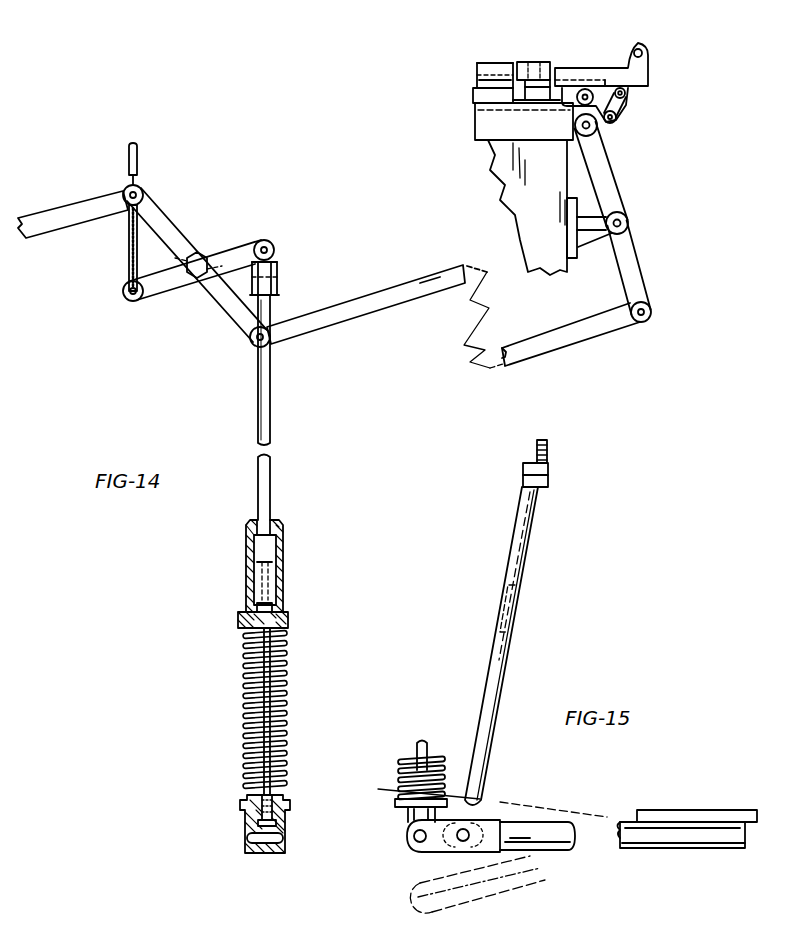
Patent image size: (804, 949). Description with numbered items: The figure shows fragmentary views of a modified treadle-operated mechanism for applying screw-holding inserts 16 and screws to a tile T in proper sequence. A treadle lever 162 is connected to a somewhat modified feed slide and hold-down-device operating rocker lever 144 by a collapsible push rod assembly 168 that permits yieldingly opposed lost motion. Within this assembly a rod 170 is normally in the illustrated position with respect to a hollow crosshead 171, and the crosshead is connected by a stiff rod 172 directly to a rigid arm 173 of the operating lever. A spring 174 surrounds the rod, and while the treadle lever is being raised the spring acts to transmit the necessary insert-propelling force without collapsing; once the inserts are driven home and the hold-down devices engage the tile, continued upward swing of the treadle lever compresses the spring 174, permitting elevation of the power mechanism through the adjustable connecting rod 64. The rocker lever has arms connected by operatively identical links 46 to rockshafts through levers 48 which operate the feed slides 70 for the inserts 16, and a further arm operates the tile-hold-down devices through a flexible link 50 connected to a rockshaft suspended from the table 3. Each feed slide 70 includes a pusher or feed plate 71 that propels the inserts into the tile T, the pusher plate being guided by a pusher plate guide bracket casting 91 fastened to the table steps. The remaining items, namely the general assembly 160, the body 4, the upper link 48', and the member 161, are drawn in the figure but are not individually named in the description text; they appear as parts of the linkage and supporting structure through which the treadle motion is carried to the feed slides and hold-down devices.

In FIG. 14, the flexible link 50 is at (137, 143).
In FIG. 14, the links 46 is at (58, 196).
In FIG. 14, the rocker lever 144 is at (210, 238).
In FIG. 14, the rigid arm 173 is at (247, 244).
In FIG. 14, the linkage assembly 160 is at (328, 414).
In FIG. 14, the stiff rod 172 is at (271, 456).
In FIG. 14, the collapsible push rod assembly 168 is at (220, 590).
In FIG. 14, the hollow crosshead 171 is at (283, 603).
In FIG. 14, the spring 174 is at (288, 671).
In FIG. 15, the spring 174 is at (475, 795).
In FIG. 14, the rod 170 is at (270, 721).
In FIG. 15, the rod 170 is at (425, 728).
In FIG. 14, the treadle lever 162 is at (268, 857).
In FIG. 15, the treadle lever 162 is at (556, 848).
In FIG. 15, the tile T is at (476, 65).
In FIG. 15, the inserts 16 is at (488, 72).
In FIG. 15, the table 3 is at (476, 98).
In FIG. 15, the pusher plate 71 is at (535, 66).
In FIG. 15, the pusher plate guide bracket casting 91 is at (612, 70).
In FIG. 15, the feed slide 70 is at (660, 80).
In FIG. 15, the body 4 is at (542, 213).
In FIG. 15, the upper link 48' is at (619, 174).
In FIG. 15, the lever 48 is at (593, 293).
In FIG. 15, the connecting rod 64 is at (543, 563).
In FIG. 15, the plate 161 is at (685, 811).